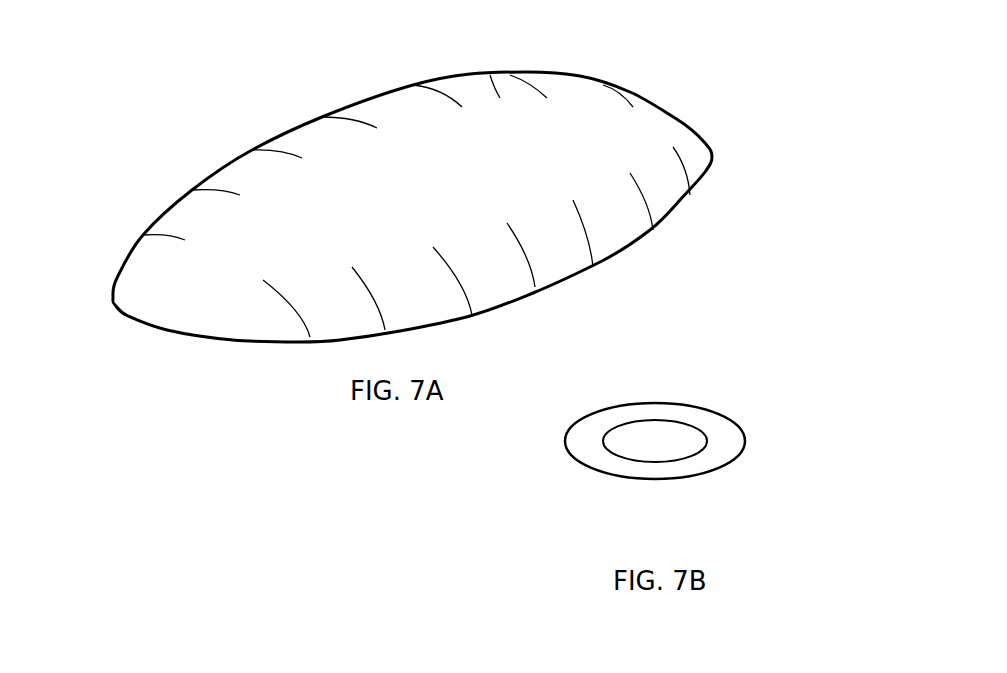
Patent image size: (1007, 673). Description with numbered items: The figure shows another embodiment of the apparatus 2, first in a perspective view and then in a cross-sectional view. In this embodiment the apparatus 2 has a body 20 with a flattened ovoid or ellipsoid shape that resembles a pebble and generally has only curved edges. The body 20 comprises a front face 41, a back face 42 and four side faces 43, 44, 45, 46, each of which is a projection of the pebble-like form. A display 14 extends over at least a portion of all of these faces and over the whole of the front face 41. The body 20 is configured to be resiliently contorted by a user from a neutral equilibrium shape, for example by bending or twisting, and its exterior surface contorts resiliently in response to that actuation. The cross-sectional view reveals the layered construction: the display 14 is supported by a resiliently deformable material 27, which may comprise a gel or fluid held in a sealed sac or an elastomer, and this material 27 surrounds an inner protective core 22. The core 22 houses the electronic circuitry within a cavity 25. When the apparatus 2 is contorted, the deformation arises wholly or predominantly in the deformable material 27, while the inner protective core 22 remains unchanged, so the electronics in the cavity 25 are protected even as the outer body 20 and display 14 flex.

In FIG. 7A, the apparatus 2 is at (97, 212).
In FIG. 7B, the apparatus 2 is at (502, 483).
In FIG. 7A, the display 14 is at (500, 73).
In FIG. 7B, the display 14 is at (600, 412).
In FIG. 7A, the body 20 is at (688, 72).
In FIG. 7B, the inner protective core 22 is at (647, 420).
In FIG. 7B, the cavity 25 is at (665, 447).
In FIG. 7B, the resiliently deformable material 27 is at (727, 430).
In FIG. 7A, the front face 41 is at (415, 153).
In FIG. 7B, the front face 41 is at (677, 390).
In FIG. 7A, the back face 42 is at (302, 363).
In FIG. 7B, the back face 42 is at (645, 492).
In FIG. 7A, the side face 43 is at (227, 140).
In FIG. 7B, the side face 43 is at (543, 443).
In FIG. 7A, the side face 44 is at (615, 228).
In FIG. 7B, the side face 44 is at (758, 447).
In FIG. 7A, the side face 45 is at (725, 123).
In FIG. 7A, the side face 46 is at (103, 322).